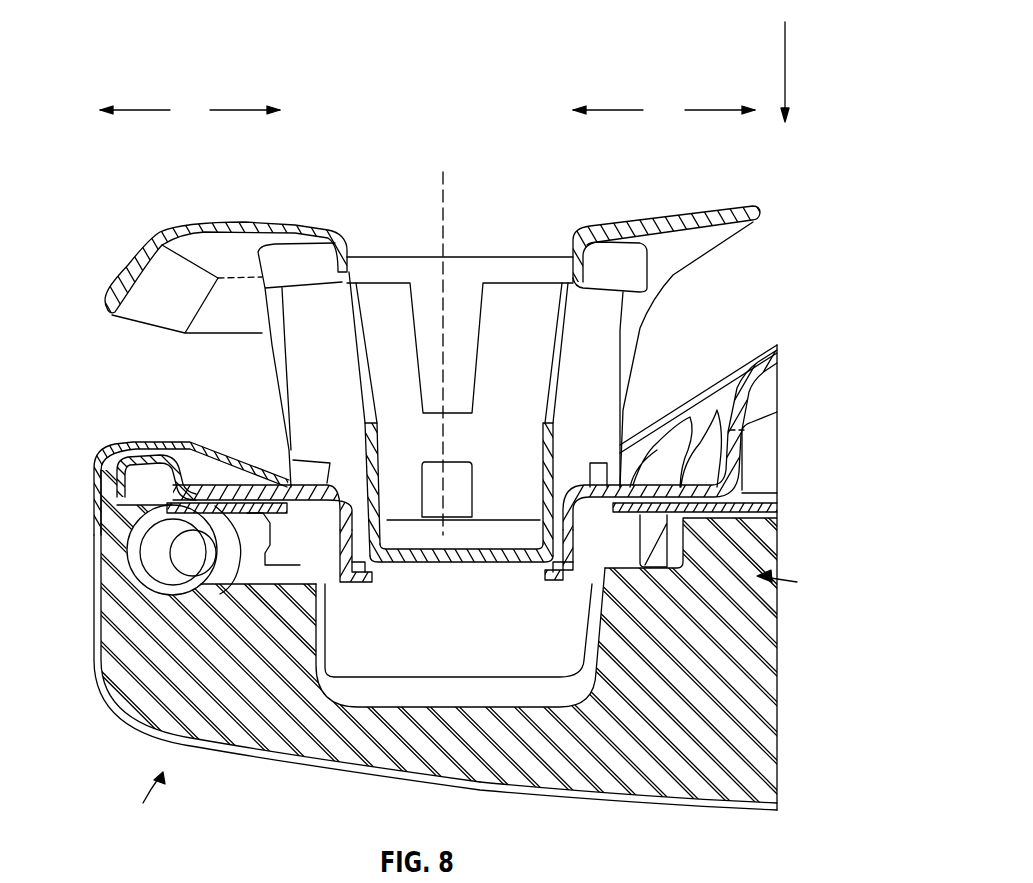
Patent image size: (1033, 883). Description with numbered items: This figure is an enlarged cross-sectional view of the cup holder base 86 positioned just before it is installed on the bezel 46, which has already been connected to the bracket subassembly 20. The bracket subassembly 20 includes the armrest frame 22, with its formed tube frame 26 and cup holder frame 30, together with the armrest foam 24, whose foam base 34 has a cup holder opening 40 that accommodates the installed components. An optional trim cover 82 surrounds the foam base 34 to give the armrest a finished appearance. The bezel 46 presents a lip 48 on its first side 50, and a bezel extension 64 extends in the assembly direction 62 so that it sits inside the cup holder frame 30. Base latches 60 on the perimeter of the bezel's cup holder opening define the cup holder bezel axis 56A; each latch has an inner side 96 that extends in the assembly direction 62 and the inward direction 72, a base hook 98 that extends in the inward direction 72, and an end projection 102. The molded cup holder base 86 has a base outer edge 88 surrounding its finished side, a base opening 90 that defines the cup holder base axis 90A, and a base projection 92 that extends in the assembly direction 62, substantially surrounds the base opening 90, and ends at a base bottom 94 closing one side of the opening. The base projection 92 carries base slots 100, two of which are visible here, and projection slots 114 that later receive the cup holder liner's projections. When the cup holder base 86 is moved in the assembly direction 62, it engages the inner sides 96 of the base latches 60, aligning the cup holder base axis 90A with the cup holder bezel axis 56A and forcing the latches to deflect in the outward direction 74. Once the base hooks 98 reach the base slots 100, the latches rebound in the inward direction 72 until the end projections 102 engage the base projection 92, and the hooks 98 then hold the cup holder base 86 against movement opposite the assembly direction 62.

The bracket subassembly 20 is at (148, 808).
The armrest frame 22 is at (148, 553).
The armrest foam 24 is at (110, 630).
The formed tube frame 26 is at (182, 592).
The cup holder frame 30 is at (238, 580).
The foam base 34 is at (610, 784).
The cup holder opening 40 is at (440, 707).
The bezel 46 is at (130, 444).
The lip 48 is at (110, 470).
The first side 50 is at (205, 480).
The cup holder bezel axis 56A is at (442, 455).
The base latches 60 is at (553, 566).
The assembly direction 62 is at (788, 60).
The bezel extension 64 is at (621, 552).
The inward direction 72 is at (228, 76).
The outward direction 74 is at (118, 76).
The trim cover 82 is at (683, 810).
The cup holder base 86 is at (760, 205).
The base outer edge 88 is at (295, 226).
The base opening 90 is at (525, 256).
The cup holder base axis 90A is at (448, 204).
The base projection 92 is at (600, 363).
The base bottom 94 is at (455, 562).
The inner side 96 is at (545, 480).
The base hook 98 is at (547, 564).
The base slots 100 is at (357, 330).
The end projection 102 is at (574, 600).
The projection slots 114 is at (473, 500).